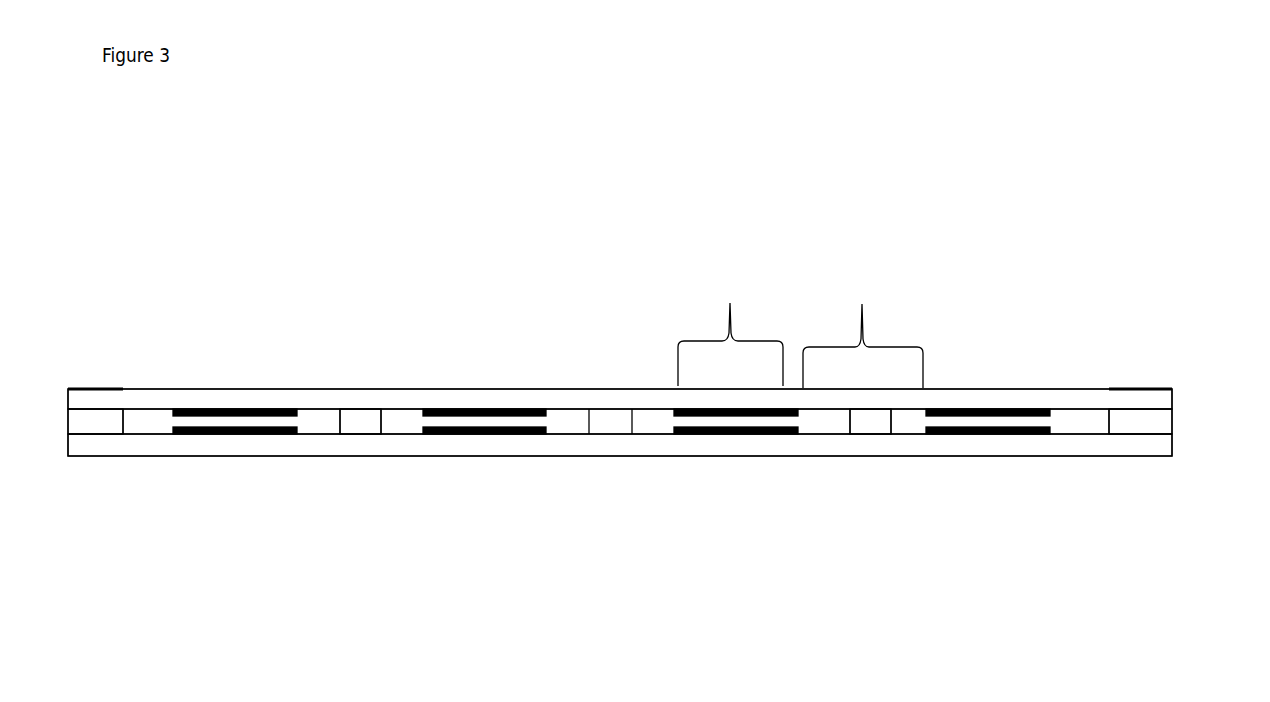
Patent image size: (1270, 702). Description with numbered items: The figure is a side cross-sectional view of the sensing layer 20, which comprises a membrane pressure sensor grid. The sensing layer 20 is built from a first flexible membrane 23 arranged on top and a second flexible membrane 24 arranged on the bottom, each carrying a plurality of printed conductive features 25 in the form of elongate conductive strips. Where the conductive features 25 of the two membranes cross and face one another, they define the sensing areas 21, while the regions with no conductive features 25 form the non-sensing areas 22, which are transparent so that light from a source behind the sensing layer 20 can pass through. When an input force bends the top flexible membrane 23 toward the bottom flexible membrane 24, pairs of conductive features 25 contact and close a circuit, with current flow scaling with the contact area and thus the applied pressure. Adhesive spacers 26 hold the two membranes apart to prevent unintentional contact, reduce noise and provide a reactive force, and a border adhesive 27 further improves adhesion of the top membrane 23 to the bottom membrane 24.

The sensing layer 20 is at (620, 520).
The sensing areas 21 is at (730, 303).
The non-sensing areas 22 is at (862, 304).
The first flexible membrane 23 is at (1000, 389).
The second flexible membrane 24 is at (977, 456).
The printed conductive features 25 is at (522, 412).
The adhesive spacers 26 is at (615, 477).
The border adhesive 27 is at (1140, 435).